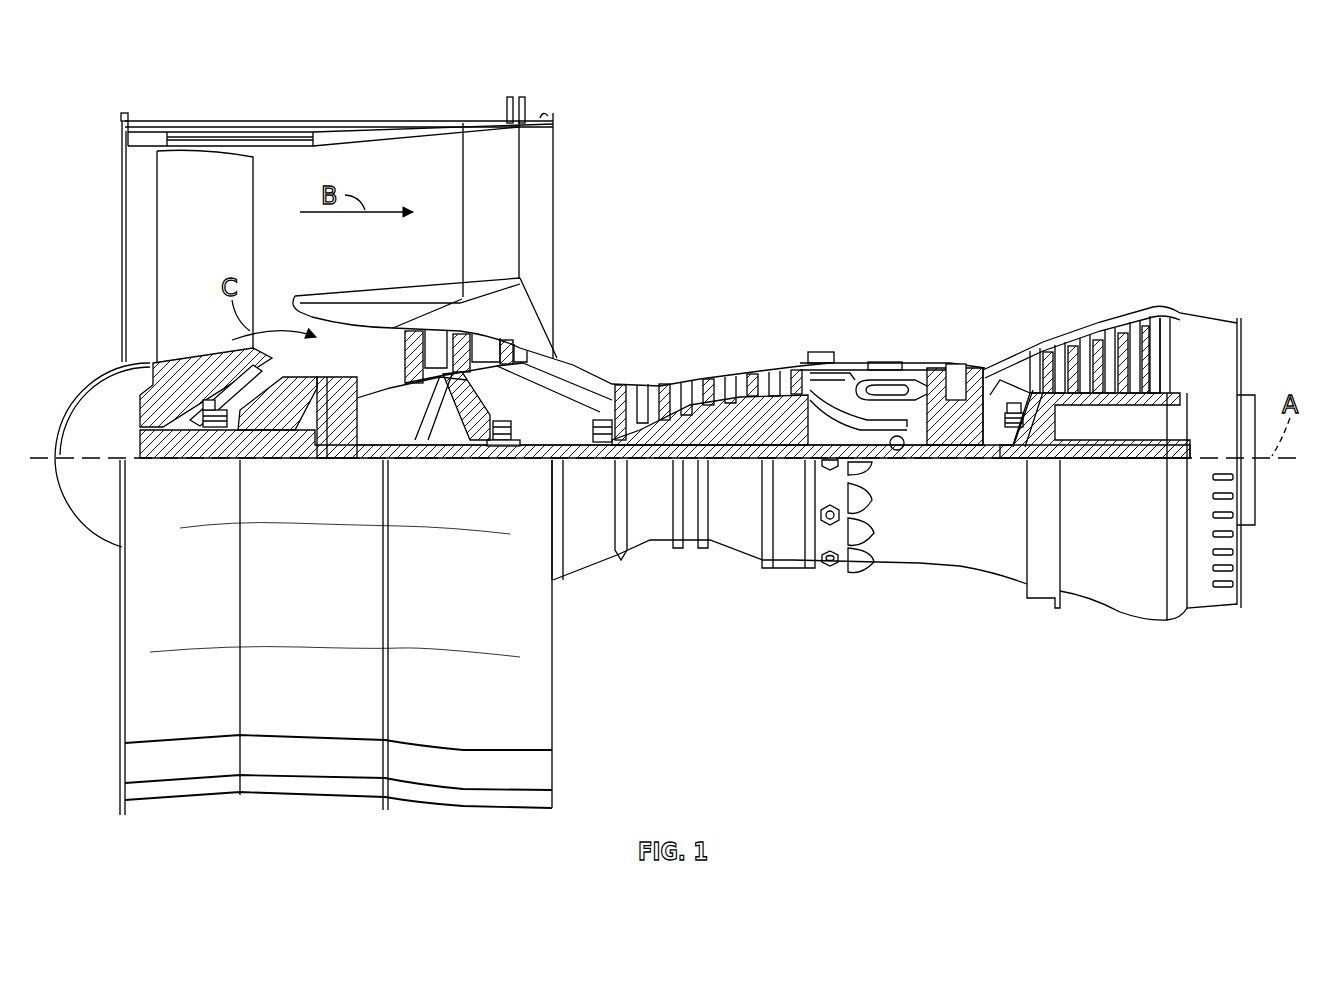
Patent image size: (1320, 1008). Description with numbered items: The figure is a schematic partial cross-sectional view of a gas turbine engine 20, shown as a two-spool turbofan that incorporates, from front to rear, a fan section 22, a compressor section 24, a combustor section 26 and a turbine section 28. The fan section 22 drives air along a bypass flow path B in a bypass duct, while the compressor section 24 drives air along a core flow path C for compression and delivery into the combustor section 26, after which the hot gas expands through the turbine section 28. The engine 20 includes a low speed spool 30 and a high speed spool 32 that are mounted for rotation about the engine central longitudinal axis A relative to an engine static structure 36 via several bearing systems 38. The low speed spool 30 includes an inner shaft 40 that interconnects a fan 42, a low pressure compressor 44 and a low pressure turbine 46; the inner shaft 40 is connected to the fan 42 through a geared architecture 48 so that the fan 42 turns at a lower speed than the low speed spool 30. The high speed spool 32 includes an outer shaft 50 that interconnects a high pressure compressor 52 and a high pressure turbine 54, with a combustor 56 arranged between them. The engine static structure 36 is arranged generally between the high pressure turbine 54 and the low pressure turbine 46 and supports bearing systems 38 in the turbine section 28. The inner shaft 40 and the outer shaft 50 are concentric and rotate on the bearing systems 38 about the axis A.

The gas turbine engine 20 is at (1124, 132).
The fan section 22 is at (222, 114).
The compressor section 24 is at (716, 278).
The combustor section 26 is at (893, 262).
The turbine section 28 is at (1036, 254).
The low speed spool 30 is at (751, 466).
The high speed spool 32 is at (800, 420).
The engine static structure 36 is at (787, 574).
The bearing systems 38 is at (215, 430).
The inner shaft 40 is at (570, 462).
The fan 42 is at (213, 258).
The low pressure compressor 44 is at (477, 343).
The low pressure turbine 46 is at (1105, 332).
The geared architecture 48 is at (345, 443).
The outer shaft 50 is at (898, 452).
The high pressure compressor 52 is at (705, 428).
The high pressure turbine 54 is at (953, 362).
The combustor 56 is at (880, 386).